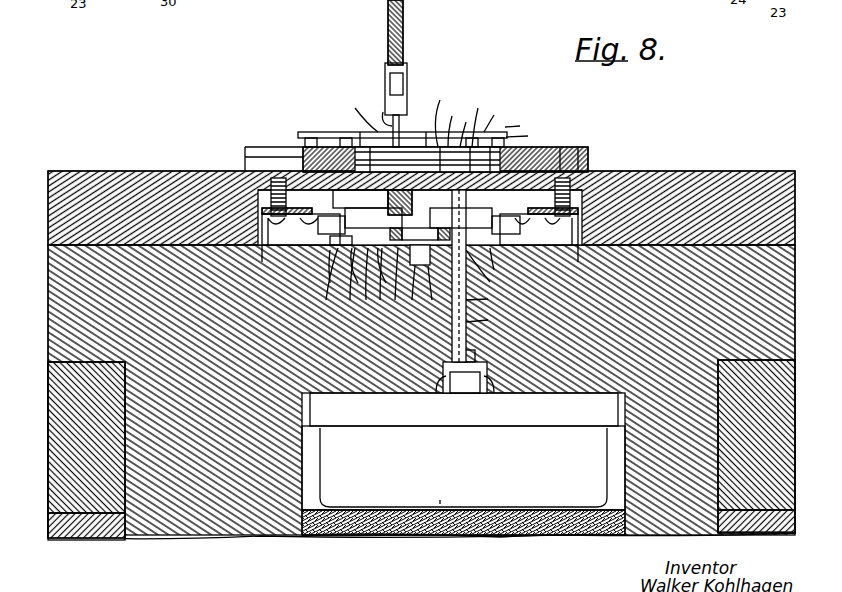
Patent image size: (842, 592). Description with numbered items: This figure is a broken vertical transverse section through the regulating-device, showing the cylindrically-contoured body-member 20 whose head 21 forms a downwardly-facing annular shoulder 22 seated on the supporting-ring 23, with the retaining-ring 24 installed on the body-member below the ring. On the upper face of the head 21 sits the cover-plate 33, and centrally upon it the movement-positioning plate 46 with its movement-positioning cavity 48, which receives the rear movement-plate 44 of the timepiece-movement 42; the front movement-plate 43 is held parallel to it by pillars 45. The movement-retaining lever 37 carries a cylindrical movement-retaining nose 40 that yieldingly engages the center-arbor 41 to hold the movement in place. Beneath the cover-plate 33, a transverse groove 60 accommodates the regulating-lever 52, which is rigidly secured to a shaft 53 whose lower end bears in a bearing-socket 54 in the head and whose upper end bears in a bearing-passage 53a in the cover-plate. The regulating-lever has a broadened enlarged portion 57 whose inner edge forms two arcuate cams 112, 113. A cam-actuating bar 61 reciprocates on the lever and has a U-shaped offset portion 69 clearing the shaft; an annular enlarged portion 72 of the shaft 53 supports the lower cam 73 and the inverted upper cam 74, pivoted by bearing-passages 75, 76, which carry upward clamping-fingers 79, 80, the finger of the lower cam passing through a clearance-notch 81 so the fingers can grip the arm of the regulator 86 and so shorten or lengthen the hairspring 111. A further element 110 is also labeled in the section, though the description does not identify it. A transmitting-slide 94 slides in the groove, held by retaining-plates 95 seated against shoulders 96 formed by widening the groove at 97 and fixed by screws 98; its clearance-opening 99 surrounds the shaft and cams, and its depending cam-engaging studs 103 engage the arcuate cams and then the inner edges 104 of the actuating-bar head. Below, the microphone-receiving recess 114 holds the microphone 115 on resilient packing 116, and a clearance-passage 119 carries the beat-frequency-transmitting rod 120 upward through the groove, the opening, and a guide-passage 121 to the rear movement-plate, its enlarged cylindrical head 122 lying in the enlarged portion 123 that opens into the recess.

The body-member 20 is at (198, 520).
The head 21 is at (62, 303).
The annular shoulder 22 is at (50, 370).
The supporting-ring 23 is at (62, 418).
The retaining-ring 24 is at (75, 535).
The cover-plate 33 is at (750, 171).
The movement-retaining lever 37 is at (388, 26).
The movement-retaining nose 40 is at (385, 78).
The center-arbor 41 is at (382, 112).
The timepiece-movement 42 is at (523, 122).
The front movement-plate 43 is at (495, 116).
The rear movement-plate 44 is at (478, 120).
The pillars 45 is at (526, 136).
The movement-positioning plate 46 is at (588, 152).
The movement-positioning cavity 48 is at (313, 132).
The regulating-lever 52 is at (435, 289).
The shaft 53 is at (400, 280).
The bearing-passage 53a is at (354, 110).
The bearing-socket 54 is at (416, 289).
The enlarged portion 57 is at (352, 281).
The transverse groove 60 is at (320, 192).
The cam-actuating bar 61 is at (371, 280).
The U-shaped offset portion 69 is at (333, 240).
The annular enlarged portion 72 is at (386, 280).
The lower cam 73 is at (360, 199).
The upper cam 74 is at (391, 202).
The bearing-passage of lower cam 75 is at (418, 236).
The bearing-passage of upper cam 76 is at (390, 272).
The clamping-finger 79 is at (448, 124).
The clamping-finger 80 is at (360, 132).
The clearance-notch 81 is at (469, 276).
The regulator 86 is at (444, 115).
The transmitting-slide 94 is at (585, 147).
The retaining-plates 95 is at (420, 231).
The shoulders 96 is at (420, 228).
The widened groove portions 97 is at (262, 262).
The screws 98 is at (270, 178).
The clearance-opening 99 is at (552, 152).
The cam-engaging studs 103 is at (415, 232).
The inner edges 104 is at (419, 280).
The spring seat 110 is at (368, 272).
The hairspring 111 is at (426, 132).
The arcuate cam 112 is at (491, 273).
The arcuate cam 113 is at (342, 273).
The microphone-receiving recess 114 is at (306, 476).
The microphone 115 is at (440, 498).
The resilient packing 116 is at (378, 522).
The clearance-passage 119 is at (490, 321).
The beat-frequency-transmitting rod 120 is at (490, 300).
The guide-passage 121 is at (464, 128).
The enlarged cylindrical head 122 is at (488, 393).
The enlarged portion 123 is at (440, 393).